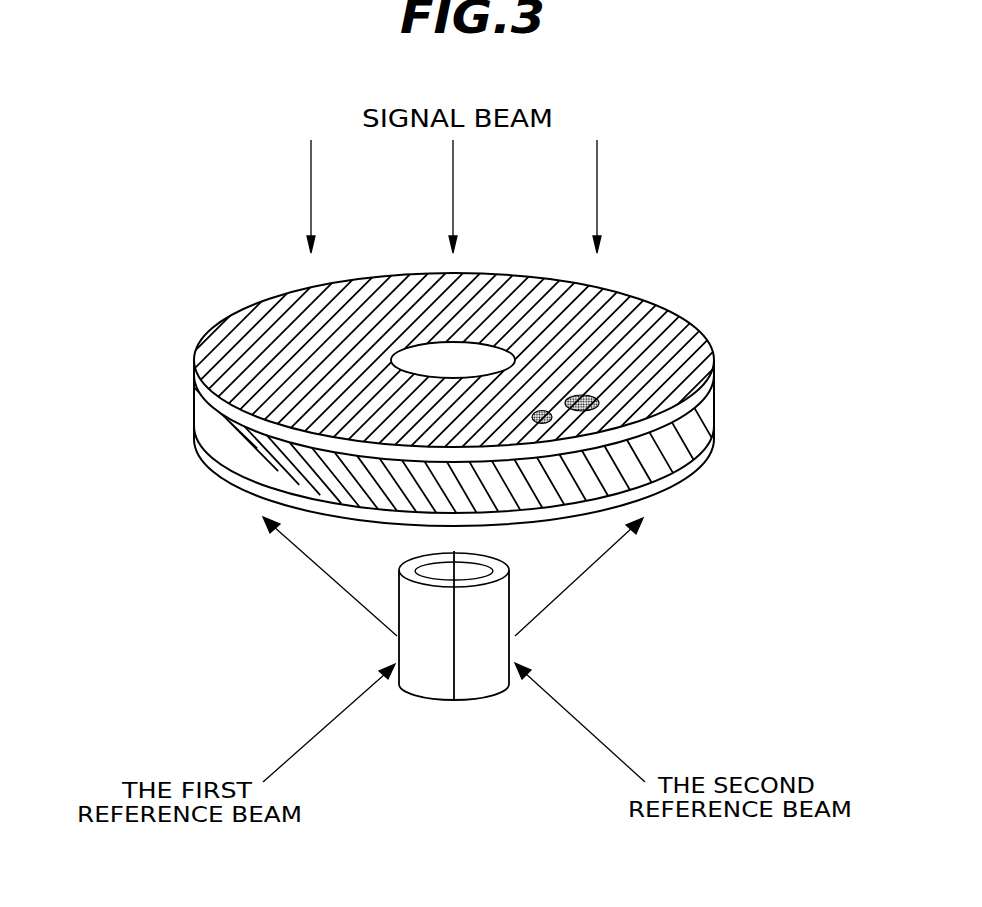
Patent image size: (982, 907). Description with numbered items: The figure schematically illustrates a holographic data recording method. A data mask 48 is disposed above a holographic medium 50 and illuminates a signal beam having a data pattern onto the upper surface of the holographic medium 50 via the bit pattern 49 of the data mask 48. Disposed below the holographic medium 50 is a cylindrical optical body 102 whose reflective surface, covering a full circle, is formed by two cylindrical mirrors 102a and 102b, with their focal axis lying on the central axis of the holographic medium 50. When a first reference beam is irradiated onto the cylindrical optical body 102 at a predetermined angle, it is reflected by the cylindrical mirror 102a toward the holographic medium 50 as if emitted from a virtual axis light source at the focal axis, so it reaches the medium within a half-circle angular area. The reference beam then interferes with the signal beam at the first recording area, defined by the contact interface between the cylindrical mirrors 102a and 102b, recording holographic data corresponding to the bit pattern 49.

The data mask 48 is at (672, 340).
The holographic medium 50 is at (677, 437).
The bit pattern 49 is at (597, 407).
The cylindrical optical body 102 is at (460, 688).
The cylindrical mirror 102a is at (432, 690).
The cylindrical mirror 102b is at (500, 668).